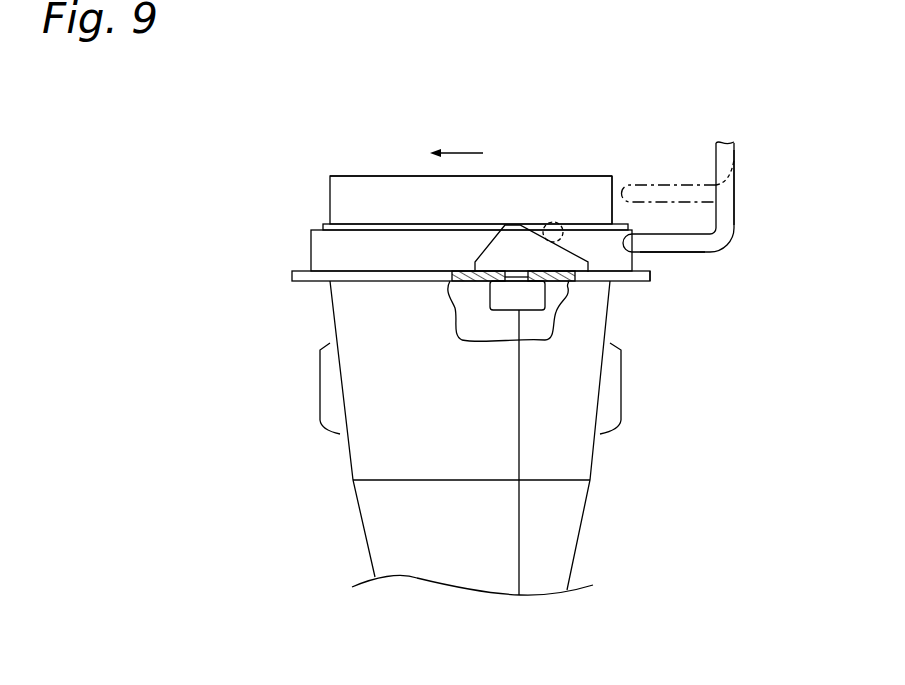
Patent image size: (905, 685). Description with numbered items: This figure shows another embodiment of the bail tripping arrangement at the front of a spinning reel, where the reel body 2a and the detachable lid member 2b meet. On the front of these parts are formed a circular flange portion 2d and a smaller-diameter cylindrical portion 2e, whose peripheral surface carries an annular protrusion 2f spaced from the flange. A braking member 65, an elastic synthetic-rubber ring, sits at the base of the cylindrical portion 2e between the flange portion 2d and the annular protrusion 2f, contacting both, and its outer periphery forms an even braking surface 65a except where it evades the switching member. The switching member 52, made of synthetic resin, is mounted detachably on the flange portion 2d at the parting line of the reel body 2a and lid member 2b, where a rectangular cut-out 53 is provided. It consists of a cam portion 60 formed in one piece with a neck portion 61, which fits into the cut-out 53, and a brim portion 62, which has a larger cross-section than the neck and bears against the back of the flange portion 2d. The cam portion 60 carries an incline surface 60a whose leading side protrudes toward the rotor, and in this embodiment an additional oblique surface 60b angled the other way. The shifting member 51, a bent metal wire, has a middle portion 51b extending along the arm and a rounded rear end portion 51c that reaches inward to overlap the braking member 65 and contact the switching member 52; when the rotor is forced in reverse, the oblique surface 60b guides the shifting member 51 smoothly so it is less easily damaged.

The reel body 2a is at (343, 453).
The lid member 2b is at (600, 450).
The flange portion 2d is at (650, 280).
The cylindrical portion 2e is at (595, 187).
The annular protrusion 2f is at (323, 228).
The shifting member 51 is at (741, 251).
The middle portion 51b is at (734, 163).
The rear end portion 51c is at (687, 252).
The switching member 52 is at (504, 206).
The cut-out 53 is at (520, 281).
The cam portion 60 is at (493, 258).
The incline surface 60a is at (583, 245).
The oblique surface 60b is at (495, 255).
The neck portion 61 is at (495, 281).
The brim portion 62 is at (508, 294).
The braking member 65 is at (322, 238).
The braking surface 65a is at (310, 258).